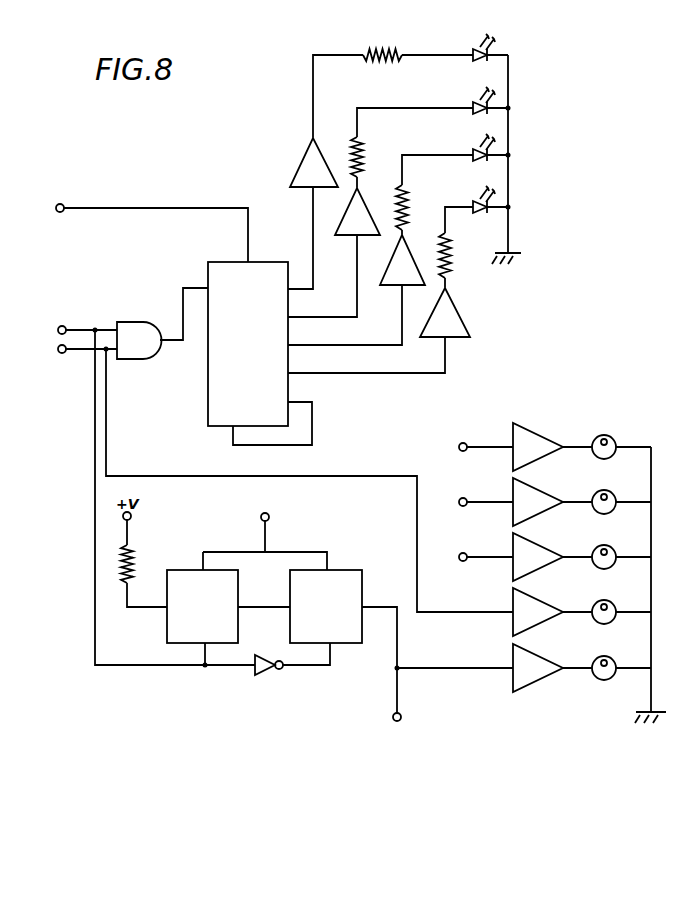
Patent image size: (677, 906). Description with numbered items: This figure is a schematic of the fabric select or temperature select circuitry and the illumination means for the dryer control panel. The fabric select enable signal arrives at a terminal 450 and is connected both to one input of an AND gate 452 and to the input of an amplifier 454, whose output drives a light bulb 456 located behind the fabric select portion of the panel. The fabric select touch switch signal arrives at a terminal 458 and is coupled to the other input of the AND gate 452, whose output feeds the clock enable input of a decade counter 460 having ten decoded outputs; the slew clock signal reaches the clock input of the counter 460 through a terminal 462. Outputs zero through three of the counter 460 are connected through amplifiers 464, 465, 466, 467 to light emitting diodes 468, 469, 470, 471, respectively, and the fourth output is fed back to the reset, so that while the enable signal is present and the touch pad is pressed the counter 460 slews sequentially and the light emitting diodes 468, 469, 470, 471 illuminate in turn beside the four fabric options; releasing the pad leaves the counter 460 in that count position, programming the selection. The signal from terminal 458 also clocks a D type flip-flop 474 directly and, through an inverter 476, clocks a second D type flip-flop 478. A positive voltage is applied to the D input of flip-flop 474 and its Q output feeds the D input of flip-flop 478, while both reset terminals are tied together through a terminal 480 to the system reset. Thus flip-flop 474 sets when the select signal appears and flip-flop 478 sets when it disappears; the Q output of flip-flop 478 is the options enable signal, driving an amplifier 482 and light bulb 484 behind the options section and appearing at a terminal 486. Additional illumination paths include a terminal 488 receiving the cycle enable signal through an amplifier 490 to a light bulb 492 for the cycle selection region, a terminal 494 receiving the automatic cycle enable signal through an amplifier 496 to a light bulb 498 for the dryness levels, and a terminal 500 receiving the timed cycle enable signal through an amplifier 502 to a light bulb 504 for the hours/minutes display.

The terminal 450 is at (58, 350).
The AND gate 452 is at (122, 312).
The amplifier 454 is at (548, 605).
The light bulb 456 is at (597, 603).
The terminal 458 is at (58, 328).
The decade counter 460 is at (208, 372).
The terminal 462 is at (57, 205).
The amplifier 464 is at (300, 160).
The amplifier 465 is at (335, 231).
The amplifier 466 is at (378, 284).
The amplifier 467 is at (461, 310).
The light emitting diode 468 is at (477, 51).
The light emitting diode 469 is at (472, 105).
The light emitting diode 470 is at (472, 152).
The light emitting diode 471 is at (472, 204).
The D type flip-flop 474 is at (167, 624).
The inverter 476 is at (261, 675).
The D type flip-flop 478 is at (340, 570).
The terminal 480 is at (270, 500).
The amplifier 482 is at (548, 661).
The light bulb 484 is at (597, 659).
The terminal 486 is at (393, 720).
The terminal 488 is at (465, 442).
The amplifier 490 is at (549, 440).
The light bulb 492 is at (597, 438).
The terminal 494 is at (465, 497).
The amplifier 496 is at (549, 495).
The light bulb 498 is at (597, 493).
The terminal 500 is at (466, 552).
The amplifier 502 is at (549, 550).
The light bulb 504 is at (597, 548).